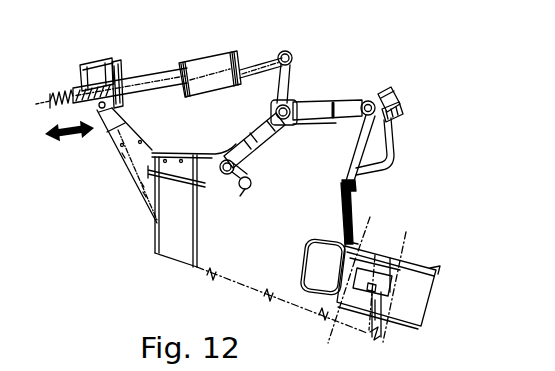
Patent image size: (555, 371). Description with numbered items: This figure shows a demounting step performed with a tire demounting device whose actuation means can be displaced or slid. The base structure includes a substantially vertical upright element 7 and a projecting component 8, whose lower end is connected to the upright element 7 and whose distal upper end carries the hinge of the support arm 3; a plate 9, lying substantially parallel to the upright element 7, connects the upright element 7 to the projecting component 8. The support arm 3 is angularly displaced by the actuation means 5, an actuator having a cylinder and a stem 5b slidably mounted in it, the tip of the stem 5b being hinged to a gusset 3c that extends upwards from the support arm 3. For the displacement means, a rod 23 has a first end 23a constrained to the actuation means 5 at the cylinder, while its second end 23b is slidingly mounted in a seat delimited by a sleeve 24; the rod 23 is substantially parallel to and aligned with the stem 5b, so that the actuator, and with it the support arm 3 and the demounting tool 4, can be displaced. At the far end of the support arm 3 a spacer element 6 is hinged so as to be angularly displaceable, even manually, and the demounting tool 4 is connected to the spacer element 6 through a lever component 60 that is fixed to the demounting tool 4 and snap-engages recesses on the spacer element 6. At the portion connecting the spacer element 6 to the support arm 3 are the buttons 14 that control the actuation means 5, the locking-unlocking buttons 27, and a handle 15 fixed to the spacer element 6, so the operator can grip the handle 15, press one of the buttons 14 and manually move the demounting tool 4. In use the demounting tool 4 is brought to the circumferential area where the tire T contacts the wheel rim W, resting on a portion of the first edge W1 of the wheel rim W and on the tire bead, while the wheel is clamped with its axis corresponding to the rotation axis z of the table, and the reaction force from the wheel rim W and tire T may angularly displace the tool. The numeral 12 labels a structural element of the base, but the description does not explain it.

The second end of the rod 23b is at (52, 90).
The sleeve 24 is at (87, 74).
The rod 23 is at (138, 80).
The first end of the rod 23a is at (160, 85).
The actuation means 5 is at (204, 58).
The stem 5b is at (257, 60).
The gusset 3c is at (312, 96).
The support arm 3 is at (314, 101).
The buttons 14 is at (393, 110).
The locking-unlocking buttons 27 is at (399, 116).
The handle 15 is at (392, 152).
The spacer element 6 is at (355, 142).
The lever component 60 is at (341, 187).
The demounting tool 4 is at (343, 218).
The projecting component 8 is at (252, 149).
The plate 9 is at (243, 185).
The upright element 7 is at (170, 231).
The swing arm 12 is at (132, 165).
The tire T is at (300, 265).
The wheel rim W is at (334, 315).
The first edge of the wheel rim W1 is at (377, 224).
The rotation axis z is at (387, 287).